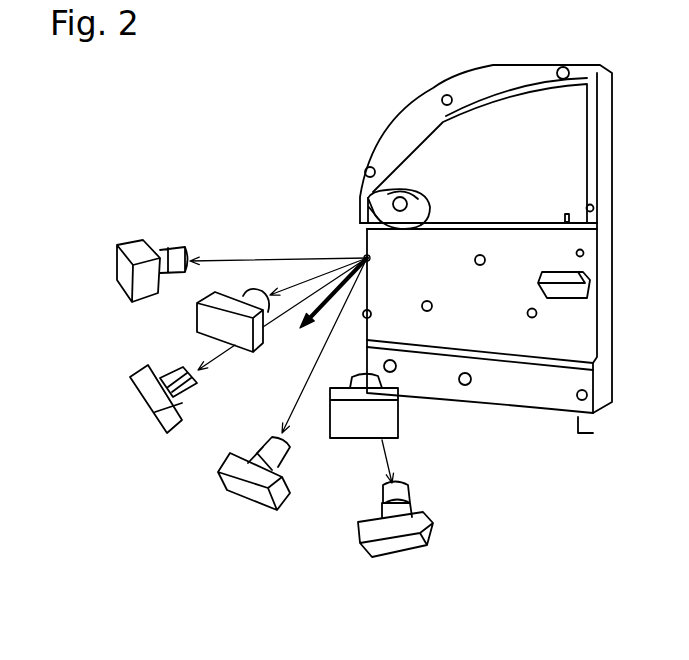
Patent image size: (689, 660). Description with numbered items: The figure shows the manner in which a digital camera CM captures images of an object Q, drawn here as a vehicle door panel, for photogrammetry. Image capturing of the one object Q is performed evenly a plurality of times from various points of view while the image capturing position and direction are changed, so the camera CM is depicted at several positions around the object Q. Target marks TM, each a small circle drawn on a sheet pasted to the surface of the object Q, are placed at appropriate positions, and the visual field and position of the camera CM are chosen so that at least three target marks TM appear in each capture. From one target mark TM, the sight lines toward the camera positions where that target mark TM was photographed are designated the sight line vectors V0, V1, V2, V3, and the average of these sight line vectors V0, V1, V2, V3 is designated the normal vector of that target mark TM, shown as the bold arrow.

The object Q is at (550, 66).
The target marks TM is at (365, 256).
The sight line vector V0 is at (222, 250).
The sight line vector V1 is at (288, 290).
The sight line vector V2 is at (223, 358).
The sight line vector V3 is at (297, 410).
The camera CM is at (122, 288).